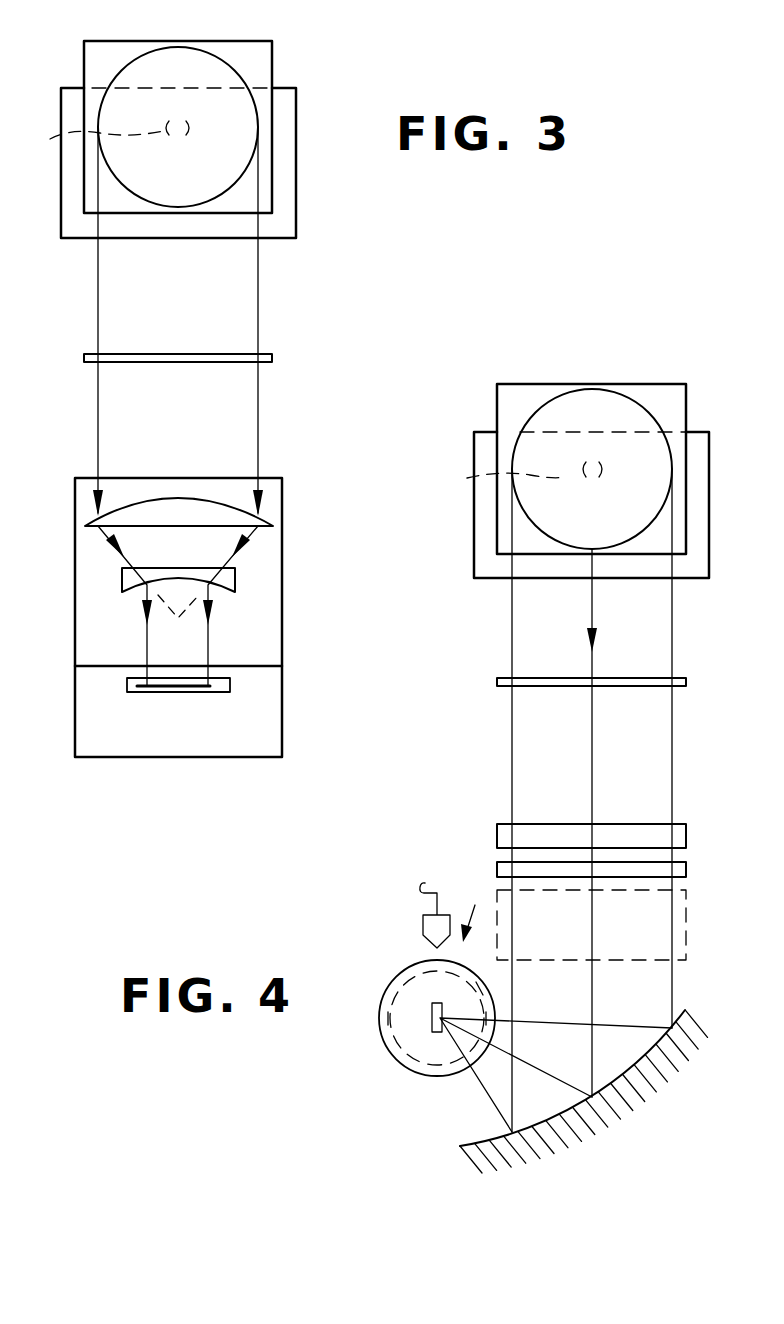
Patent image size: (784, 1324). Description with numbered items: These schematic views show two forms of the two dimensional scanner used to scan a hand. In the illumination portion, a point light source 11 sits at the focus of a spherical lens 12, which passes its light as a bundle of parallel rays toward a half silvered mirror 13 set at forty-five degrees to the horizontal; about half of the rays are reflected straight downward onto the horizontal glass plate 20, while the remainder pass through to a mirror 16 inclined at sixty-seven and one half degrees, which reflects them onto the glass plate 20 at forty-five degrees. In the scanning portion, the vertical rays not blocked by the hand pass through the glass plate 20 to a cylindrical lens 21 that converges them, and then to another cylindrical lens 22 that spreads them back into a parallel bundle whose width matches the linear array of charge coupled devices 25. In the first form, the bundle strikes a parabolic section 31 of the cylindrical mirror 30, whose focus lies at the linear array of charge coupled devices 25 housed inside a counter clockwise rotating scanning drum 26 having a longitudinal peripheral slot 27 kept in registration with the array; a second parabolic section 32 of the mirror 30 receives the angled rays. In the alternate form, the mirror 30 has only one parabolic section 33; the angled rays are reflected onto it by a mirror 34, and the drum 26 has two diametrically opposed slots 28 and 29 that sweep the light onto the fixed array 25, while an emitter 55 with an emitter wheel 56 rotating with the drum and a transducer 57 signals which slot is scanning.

In FIG. 3, the point light source 11 is at (50, 138).
In FIG. 4, the point light source 11 is at (467, 478).
In FIG. 3, the spherical lens 12 is at (239, 82).
In FIG. 4, the spherical lens 12 is at (655, 428).
In FIG. 3, the half silvered mirror 13 is at (197, 40).
In FIG. 4, the half silvered mirror 13 is at (612, 383).
In FIG. 3, the mirror 16 is at (63, 115).
In FIG. 4, the mirror 16 is at (478, 460).
In FIG. 3, the glass plate 20 is at (267, 350).
In FIG. 4, the glass plate 20 is at (497, 683).
In FIG. 3, the cylindrical lens 21 is at (173, 490).
In FIG. 4, the cylindrical lens 21 is at (497, 830).
In FIG. 3, the cylindrical lens 22 is at (122, 578).
In FIG. 4, the cylindrical lens 22 is at (497, 872).
In FIG. 3, the linear array of charge coupled devices 25 is at (203, 692).
In FIG. 4, the linear array of charge coupled devices 25 is at (432, 1020).
In FIG. 4, the rotatable scanning drum 26 is at (392, 1057).
In FIG. 3, the longitudinal peripheral slot 27 is at (127, 692).
In FIG. 4, the peripheral slot 28 is at (467, 1037).
In FIG. 4, the peripheral slot 29 is at (387, 995).
In FIG. 4, the cylindrical mirror 30 is at (635, 1136).
In FIG. 3, the parabolic section 31 is at (275, 697).
In FIG. 3, the parabolic section 32 is at (282, 613).
In FIG. 4, the parabolic section 33 is at (620, 1080).
In FIG. 4, the mirror 34 is at (687, 919).
In FIG. 4, the emitter 55 is at (475, 912).
In FIG. 4, the emitter wheel 56 is at (495, 985).
In FIG. 4, the transducer 57 is at (425, 928).